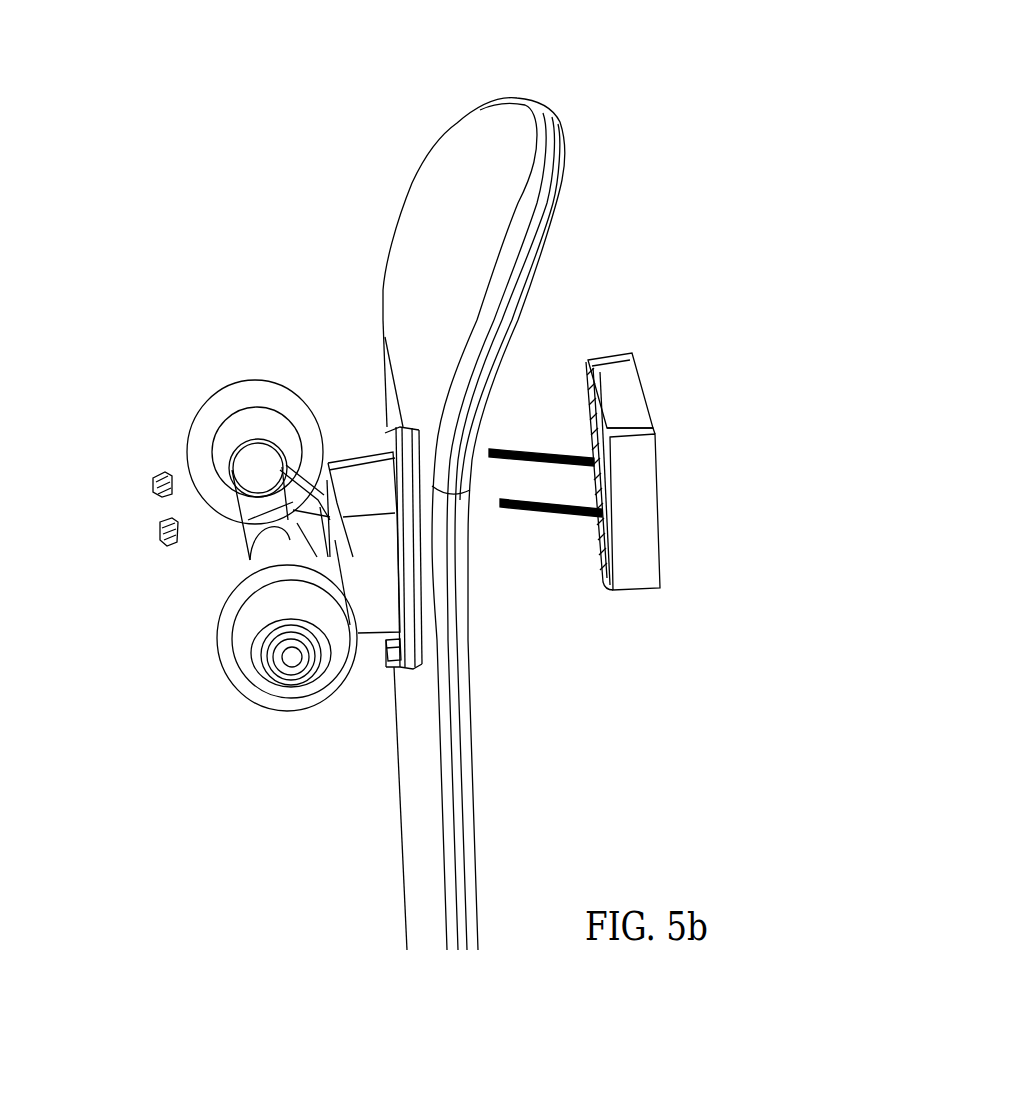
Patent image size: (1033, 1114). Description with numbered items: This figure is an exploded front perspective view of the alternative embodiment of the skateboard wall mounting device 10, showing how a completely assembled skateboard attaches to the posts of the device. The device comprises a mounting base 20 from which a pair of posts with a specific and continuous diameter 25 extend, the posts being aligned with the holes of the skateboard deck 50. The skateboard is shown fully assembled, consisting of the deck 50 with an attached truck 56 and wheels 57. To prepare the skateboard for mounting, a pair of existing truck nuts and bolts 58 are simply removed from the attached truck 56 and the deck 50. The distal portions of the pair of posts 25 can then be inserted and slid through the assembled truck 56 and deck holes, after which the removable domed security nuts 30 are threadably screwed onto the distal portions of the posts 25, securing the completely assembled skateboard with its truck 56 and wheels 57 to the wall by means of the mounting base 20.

The skateboard wall mounting device 10 is at (626, 122).
The mounting base 20 is at (628, 517).
The posts with a specific and continuous diameter 25 is at (533, 450).
The removable domed security nuts 30 is at (152, 470).
The skateboard deck 50 is at (420, 863).
The truck 56 is at (393, 454).
The wheels 57 is at (222, 656).
The truck nuts and bolts 58 is at (393, 662).